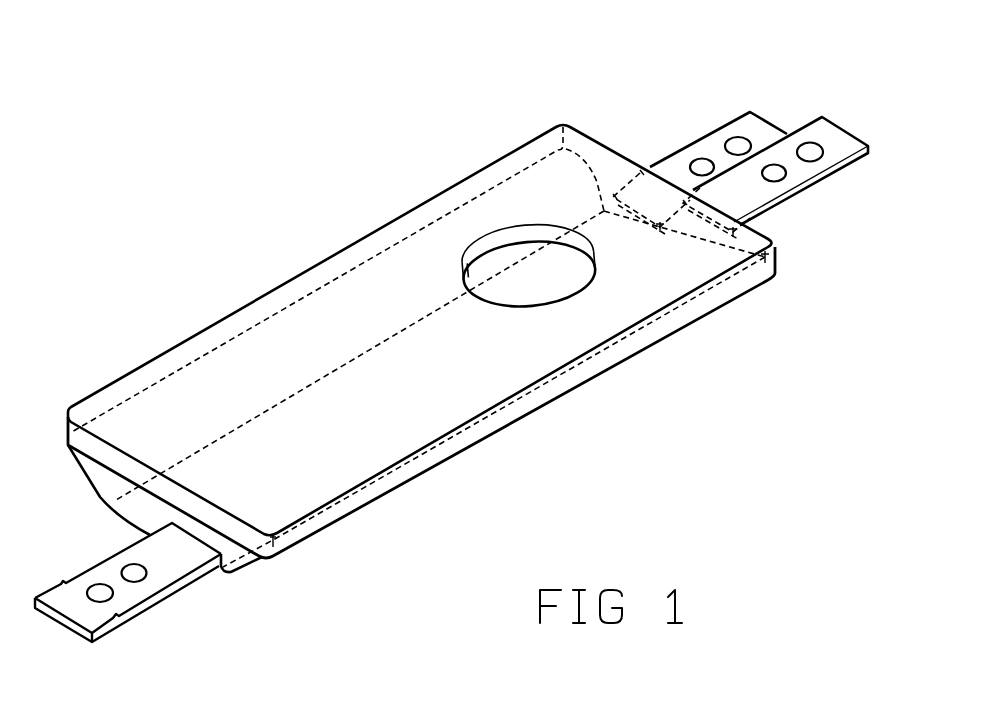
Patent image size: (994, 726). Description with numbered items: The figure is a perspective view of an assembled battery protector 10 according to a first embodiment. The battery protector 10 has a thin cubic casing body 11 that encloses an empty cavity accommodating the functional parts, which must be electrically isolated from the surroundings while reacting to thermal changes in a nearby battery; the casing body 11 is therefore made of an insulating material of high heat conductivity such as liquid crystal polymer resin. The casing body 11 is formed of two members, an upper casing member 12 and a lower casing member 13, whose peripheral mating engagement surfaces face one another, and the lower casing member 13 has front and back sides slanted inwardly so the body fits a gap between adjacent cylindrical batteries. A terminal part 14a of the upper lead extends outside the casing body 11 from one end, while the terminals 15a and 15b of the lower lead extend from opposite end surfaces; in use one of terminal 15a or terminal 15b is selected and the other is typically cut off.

The battery protector 10 is at (328, 194).
The casing body 11 is at (130, 367).
The upper casing member 12 is at (277, 300).
The lower casing member 13 is at (249, 562).
The terminal part 14a is at (803, 172).
The terminal 15a is at (714, 149).
The terminal 15b is at (171, 566).